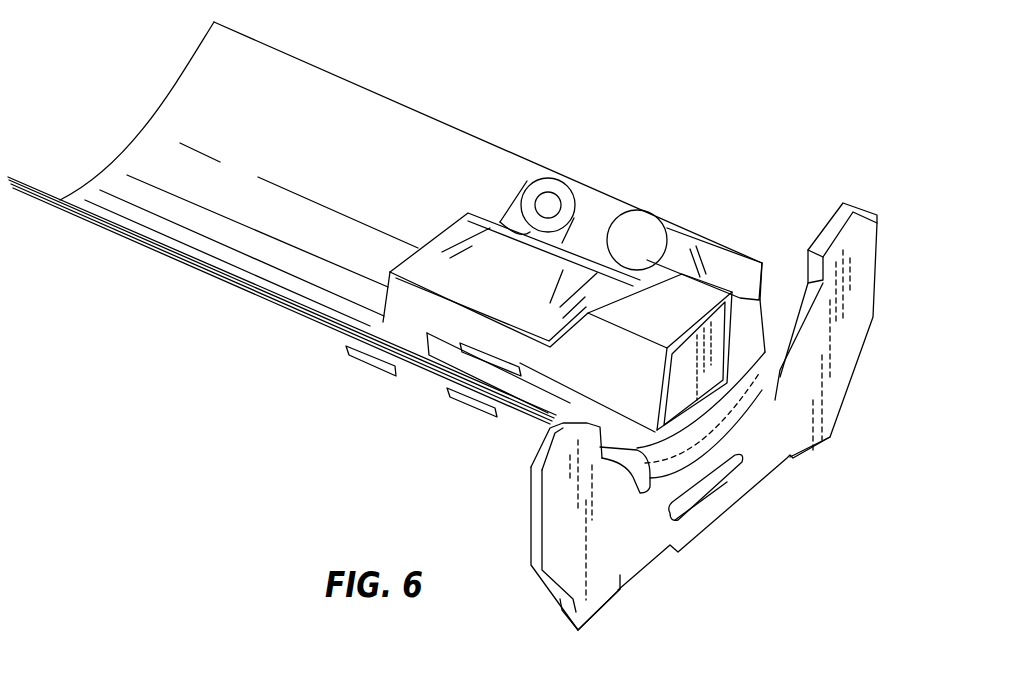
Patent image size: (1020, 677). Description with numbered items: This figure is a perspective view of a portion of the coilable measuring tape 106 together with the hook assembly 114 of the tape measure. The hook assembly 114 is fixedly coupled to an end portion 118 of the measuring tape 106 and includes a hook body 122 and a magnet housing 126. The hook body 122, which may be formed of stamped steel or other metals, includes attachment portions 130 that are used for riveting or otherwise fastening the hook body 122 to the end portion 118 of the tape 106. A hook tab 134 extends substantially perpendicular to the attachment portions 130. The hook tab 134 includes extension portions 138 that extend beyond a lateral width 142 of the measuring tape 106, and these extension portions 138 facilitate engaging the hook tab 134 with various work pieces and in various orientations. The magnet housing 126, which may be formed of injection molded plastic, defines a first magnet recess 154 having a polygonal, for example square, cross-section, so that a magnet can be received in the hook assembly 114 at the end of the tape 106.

The measuring tape 106 is at (343, 78).
The hook assembly 114 is at (778, 214).
The end portion 118 is at (488, 186).
The hook body 122 is at (758, 428).
The magnet housing 126 is at (546, 285).
The attachment portions 130 is at (432, 378).
The hook tab 134 is at (843, 340).
The extension portions 138 is at (877, 222).
The lateral width 142 is at (270, 287).
The first magnet recess 154 is at (707, 420).